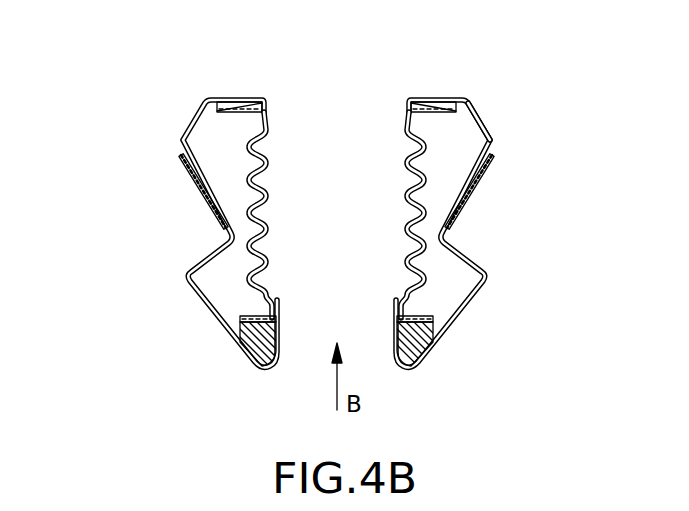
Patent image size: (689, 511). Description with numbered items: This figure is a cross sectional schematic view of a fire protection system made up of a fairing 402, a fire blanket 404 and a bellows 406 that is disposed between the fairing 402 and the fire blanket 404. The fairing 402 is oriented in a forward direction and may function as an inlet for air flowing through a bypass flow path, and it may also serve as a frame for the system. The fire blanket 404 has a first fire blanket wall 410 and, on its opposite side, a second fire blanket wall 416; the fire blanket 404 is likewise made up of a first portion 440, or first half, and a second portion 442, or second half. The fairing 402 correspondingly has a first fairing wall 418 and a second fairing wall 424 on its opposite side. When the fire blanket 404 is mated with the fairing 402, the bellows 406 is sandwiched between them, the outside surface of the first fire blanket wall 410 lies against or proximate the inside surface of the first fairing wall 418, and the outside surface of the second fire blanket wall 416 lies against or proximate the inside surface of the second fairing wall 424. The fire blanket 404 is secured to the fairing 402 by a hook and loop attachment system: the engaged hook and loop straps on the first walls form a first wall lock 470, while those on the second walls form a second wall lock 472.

The fairing 402 is at (422, 355).
The fire blanket 404 is at (477, 118).
The bellows 406 is at (269, 182).
The first fire blanket wall 410 is at (487, 137).
The second fire blanket wall 416 is at (207, 158).
The first fairing wall 418 is at (488, 148).
The second fairing wall 424 is at (197, 187).
The first portion 440 is at (465, 98).
The second portion 442 is at (207, 102).
The first wall lock 470 is at (467, 209).
The second wall lock 472 is at (206, 211).